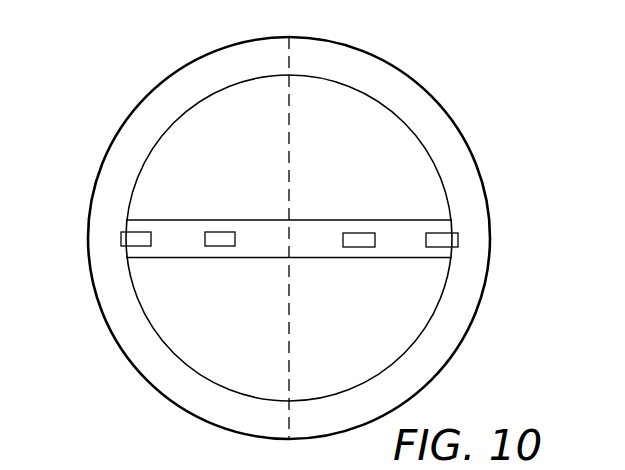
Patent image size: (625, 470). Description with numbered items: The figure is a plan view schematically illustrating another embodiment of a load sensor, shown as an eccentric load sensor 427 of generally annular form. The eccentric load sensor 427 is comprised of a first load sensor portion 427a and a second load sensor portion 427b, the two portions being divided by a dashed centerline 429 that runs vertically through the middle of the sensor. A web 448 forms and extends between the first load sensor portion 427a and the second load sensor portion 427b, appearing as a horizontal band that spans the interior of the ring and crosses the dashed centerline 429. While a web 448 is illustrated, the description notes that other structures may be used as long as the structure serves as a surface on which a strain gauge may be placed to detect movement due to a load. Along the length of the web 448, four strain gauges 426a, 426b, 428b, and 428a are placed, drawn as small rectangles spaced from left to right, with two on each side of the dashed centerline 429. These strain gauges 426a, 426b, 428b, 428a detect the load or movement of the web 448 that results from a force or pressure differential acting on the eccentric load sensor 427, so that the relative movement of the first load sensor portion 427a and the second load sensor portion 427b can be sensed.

The eccentric load sensor 427 is at (422, 88).
The first load sensor portion 427a is at (190, 102).
The second load sensor portion 427b is at (387, 233).
The strain gauge 426a is at (125, 244).
The strain gauge 426b is at (220, 232).
The strain gauge 428a is at (459, 243).
The strain gauge 428b is at (355, 247).
The dashed centerline 429 is at (290, 183).
The web 448 is at (250, 248).